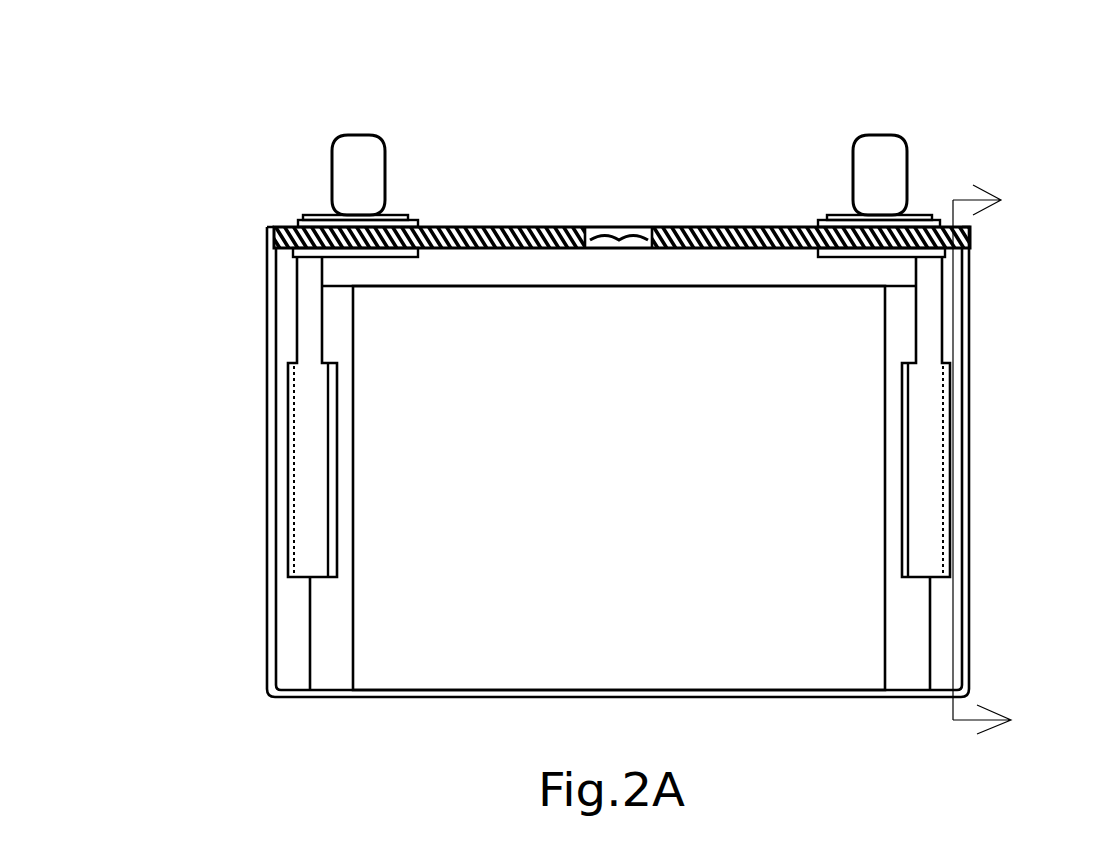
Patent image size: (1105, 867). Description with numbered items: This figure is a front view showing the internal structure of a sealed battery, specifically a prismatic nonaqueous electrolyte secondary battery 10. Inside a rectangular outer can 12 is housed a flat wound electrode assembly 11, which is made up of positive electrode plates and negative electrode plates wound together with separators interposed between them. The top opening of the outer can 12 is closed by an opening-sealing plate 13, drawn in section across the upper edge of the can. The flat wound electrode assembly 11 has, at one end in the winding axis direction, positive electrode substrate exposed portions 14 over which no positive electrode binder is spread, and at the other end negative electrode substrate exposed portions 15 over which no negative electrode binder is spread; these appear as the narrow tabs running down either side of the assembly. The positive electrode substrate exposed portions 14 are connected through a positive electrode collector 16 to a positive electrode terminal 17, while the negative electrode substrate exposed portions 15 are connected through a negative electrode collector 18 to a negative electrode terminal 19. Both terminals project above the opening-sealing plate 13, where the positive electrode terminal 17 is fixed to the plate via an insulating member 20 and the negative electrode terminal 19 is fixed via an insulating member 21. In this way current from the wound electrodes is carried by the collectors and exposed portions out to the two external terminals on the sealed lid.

The prismatic nonaqueous electrolyte secondary battery 10 is at (226, 113).
The flat wound electrode assembly 11 is at (778, 581).
The rectangular outer can 12 is at (271, 650).
The opening-sealing plate 13 is at (655, 227).
The positive electrode substrate exposed portions 14 is at (337, 610).
The negative electrode substrate exposed portions 15 is at (925, 643).
The positive electrode collector 16 is at (305, 411).
The positive electrode terminal 17 is at (368, 158).
The negative electrode collector 18 is at (935, 541).
The negative electrode terminal 19 is at (868, 155).
The insulating member 20 is at (417, 224).
The insulating member 21 is at (823, 224).